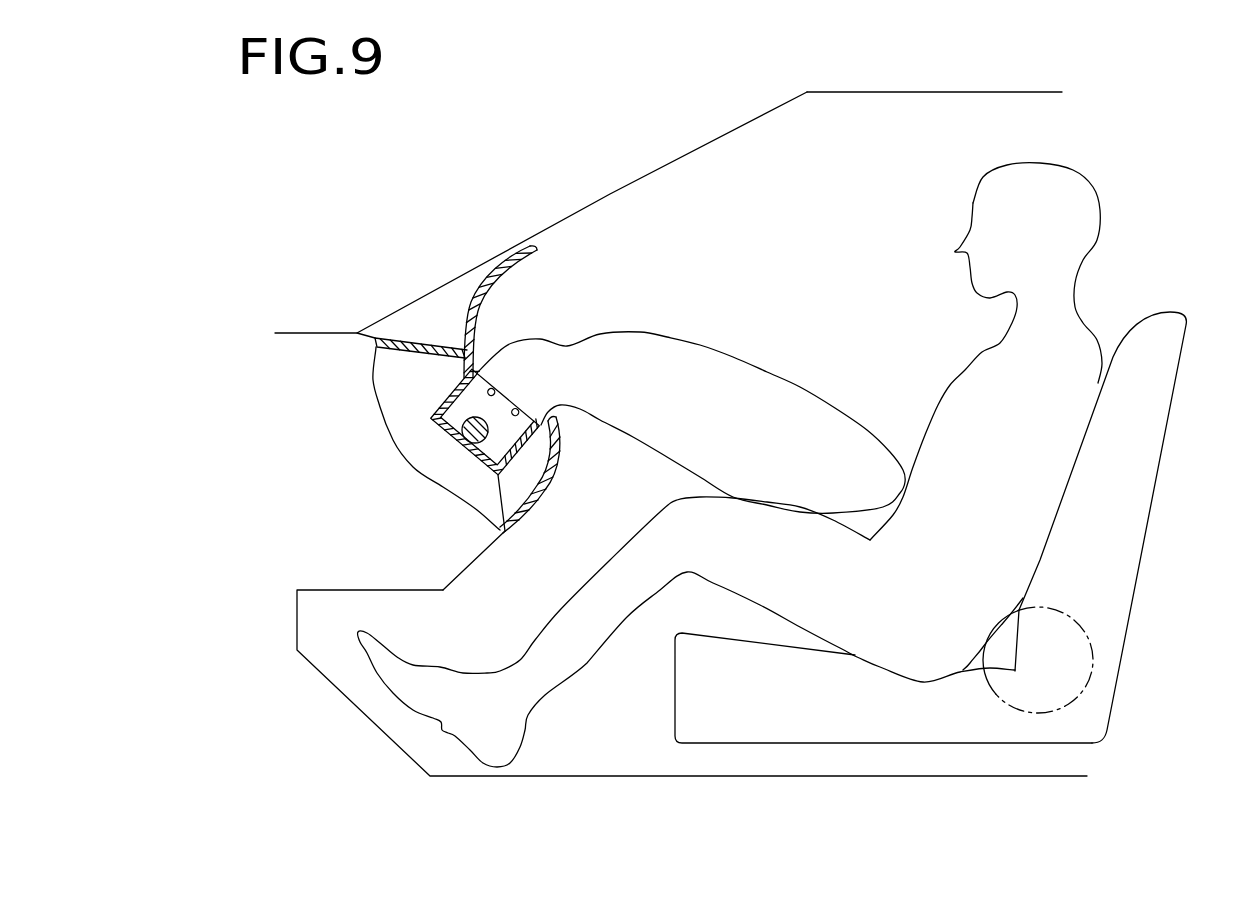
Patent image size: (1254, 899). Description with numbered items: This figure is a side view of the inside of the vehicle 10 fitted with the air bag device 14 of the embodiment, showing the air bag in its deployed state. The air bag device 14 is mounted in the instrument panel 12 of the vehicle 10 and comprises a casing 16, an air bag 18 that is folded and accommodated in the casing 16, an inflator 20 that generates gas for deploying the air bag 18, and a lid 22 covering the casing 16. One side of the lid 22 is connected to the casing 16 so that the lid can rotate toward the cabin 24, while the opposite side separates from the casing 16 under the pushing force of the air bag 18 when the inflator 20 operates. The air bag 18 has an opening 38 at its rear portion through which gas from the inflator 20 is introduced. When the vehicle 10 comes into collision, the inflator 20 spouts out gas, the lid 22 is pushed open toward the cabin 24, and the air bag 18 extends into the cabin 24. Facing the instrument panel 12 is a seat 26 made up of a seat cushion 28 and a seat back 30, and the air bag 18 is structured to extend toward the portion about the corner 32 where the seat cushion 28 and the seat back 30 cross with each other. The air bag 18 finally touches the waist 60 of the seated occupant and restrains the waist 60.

The vehicle 10 is at (937, 83).
The instrument panel 12 is at (443, 340).
The air bag device 14 is at (429, 434).
The casing 16 is at (463, 449).
The air bag 18 is at (782, 333).
The inflator 20 is at (433, 418).
The lid 22 is at (538, 253).
The cabin 24 is at (842, 208).
The seat 26 is at (881, 746).
The seat cushion 28 is at (948, 708).
The seat back 30 is at (1123, 518).
The corner 32 is at (1093, 625).
The opening 38 is at (503, 407).
The waist 60 is at (950, 590).